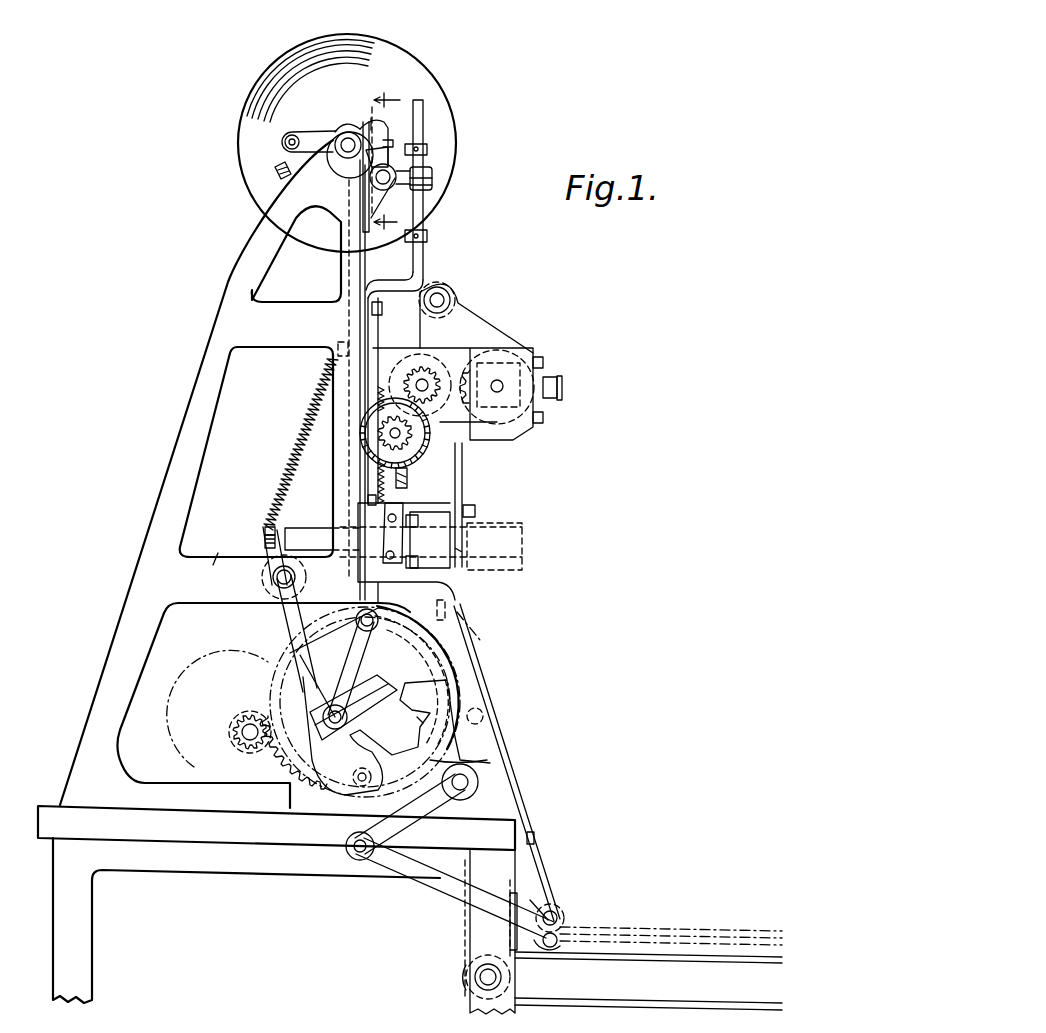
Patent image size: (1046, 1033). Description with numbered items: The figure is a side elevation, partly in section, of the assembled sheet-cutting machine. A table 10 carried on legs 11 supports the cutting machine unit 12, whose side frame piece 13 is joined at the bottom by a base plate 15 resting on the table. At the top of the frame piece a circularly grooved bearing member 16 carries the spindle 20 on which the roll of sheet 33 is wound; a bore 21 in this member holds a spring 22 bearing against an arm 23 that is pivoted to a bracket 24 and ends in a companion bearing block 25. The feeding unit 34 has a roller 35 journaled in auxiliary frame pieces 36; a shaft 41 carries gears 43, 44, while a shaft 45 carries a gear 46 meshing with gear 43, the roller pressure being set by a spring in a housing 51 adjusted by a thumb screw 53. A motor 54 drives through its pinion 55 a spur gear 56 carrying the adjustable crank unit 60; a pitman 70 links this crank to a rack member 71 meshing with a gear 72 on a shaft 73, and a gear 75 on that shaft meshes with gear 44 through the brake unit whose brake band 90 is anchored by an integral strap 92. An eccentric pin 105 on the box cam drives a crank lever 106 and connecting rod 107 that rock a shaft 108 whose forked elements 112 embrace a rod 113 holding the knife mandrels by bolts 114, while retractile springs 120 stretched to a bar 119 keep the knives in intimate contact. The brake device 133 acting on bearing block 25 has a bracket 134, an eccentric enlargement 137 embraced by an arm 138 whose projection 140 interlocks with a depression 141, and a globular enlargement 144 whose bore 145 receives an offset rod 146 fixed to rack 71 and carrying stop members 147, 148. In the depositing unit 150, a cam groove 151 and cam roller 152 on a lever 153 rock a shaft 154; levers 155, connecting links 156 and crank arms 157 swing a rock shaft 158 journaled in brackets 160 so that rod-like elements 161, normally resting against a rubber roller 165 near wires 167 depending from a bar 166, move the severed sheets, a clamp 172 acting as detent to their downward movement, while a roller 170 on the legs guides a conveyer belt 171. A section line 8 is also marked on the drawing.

The section line 8 is at (386, 162).
The table 10 is at (193, 868).
The legs 11 is at (92, 968).
The cutting machine unit 12 is at (235, 474).
The side frame piece 13 is at (211, 549).
The base plate 15 is at (48, 810).
The circularly grooved bearing member 16 is at (338, 163).
The spindle 20 is at (349, 137).
The bore 21 is at (351, 185).
The spring 22 is at (388, 158).
The arm 23 is at (310, 132).
The bracket 24 is at (287, 151).
The bearing block 25 is at (336, 130).
The sheet 33 is at (405, 281).
The feeding unit 34 is at (476, 318).
The roller 35 is at (452, 303).
The auxiliary frame pieces 36 is at (505, 347).
The shaft 41 is at (424, 378).
The gear 43 is at (462, 365).
The gear 44 is at (400, 368).
The shaft 45 is at (500, 394).
The gear 46 is at (470, 432).
The housing 51 is at (544, 370).
The thumb screw 53 is at (563, 388).
The motor 54 is at (168, 733).
The pinion 55 is at (250, 744).
The spur gear 56 is at (294, 760).
The adjustable crank unit 60 is at (396, 735).
The pitman 70 is at (355, 668).
The rack member 71 is at (378, 598).
The gear 72 is at (385, 428).
The shaft 73 is at (415, 458).
The gear 75 is at (462, 460).
The brake band 90 is at (410, 478).
The integral strap 92 is at (396, 508).
The transverse pin 105 is at (458, 670).
The crank lever 106 is at (300, 688).
The connecting rod 107 is at (285, 628).
The rock shaft 108 is at (273, 580).
The forked elements 112 is at (266, 530).
The rod 113 is at (289, 530).
The bolts 114 is at (265, 543).
The bar 119 is at (340, 345).
The retractile springs 120 is at (293, 470).
The brake device 133 is at (365, 143).
The bracket 134 is at (364, 216).
The eccentric enlargement 137 is at (384, 188).
The arm 138 is at (398, 138).
The projection 140 is at (371, 118).
The depression 141 is at (381, 138).
The globular enlargement 144 is at (432, 190).
The bore 145 is at (432, 168).
The rod 146 is at (425, 110).
The stop member 147 is at (427, 148).
The stop member 148 is at (427, 237).
The depositing unit 150 is at (492, 760).
The cam groove 151 is at (431, 728).
The cam roller 152 is at (362, 788).
The lever 153 is at (372, 779).
The rock shaft 154 is at (466, 790).
The levers 155 is at (416, 826).
The connecting links 156 is at (445, 895).
The crank arms 157 is at (560, 928).
The rock shaft 158 is at (560, 912).
The brackets 160 is at (540, 898).
The rod-like elements 161 is at (528, 815).
The rubber roller 165 is at (484, 716).
The bar 166 is at (448, 600).
The rigid wires 167 is at (470, 658).
The roller 170 is at (518, 988).
The conveyer belt 171 is at (668, 1004).
The clamp 172 is at (538, 838).